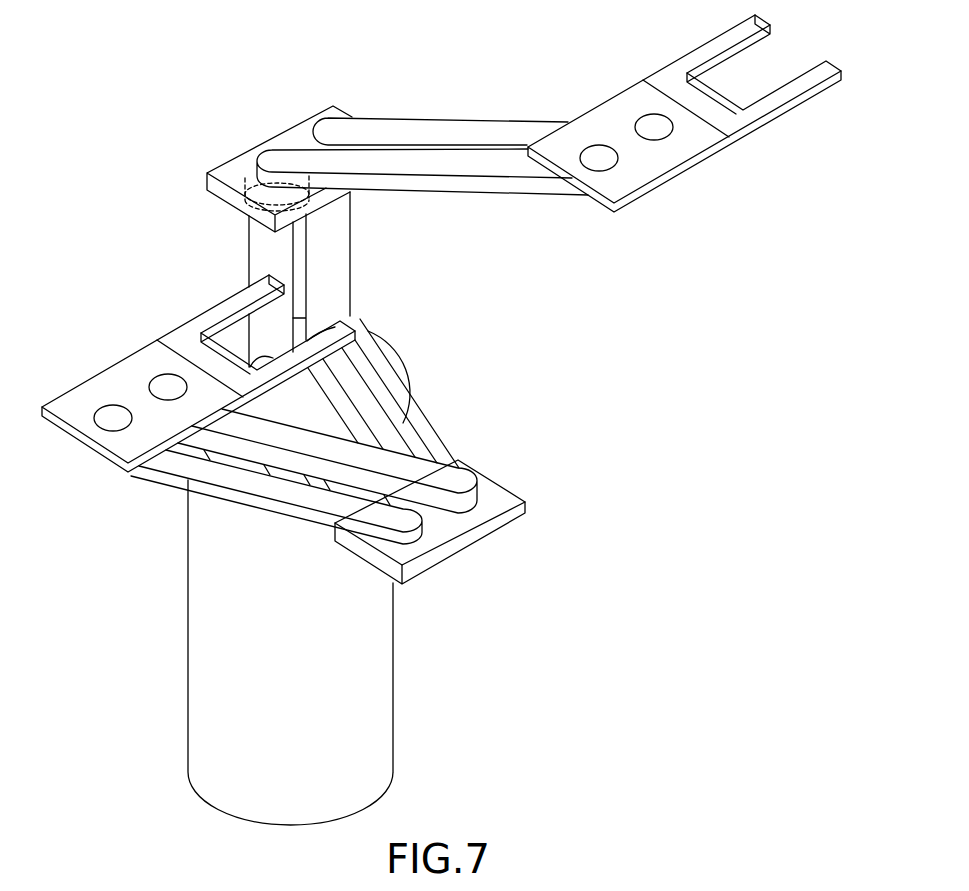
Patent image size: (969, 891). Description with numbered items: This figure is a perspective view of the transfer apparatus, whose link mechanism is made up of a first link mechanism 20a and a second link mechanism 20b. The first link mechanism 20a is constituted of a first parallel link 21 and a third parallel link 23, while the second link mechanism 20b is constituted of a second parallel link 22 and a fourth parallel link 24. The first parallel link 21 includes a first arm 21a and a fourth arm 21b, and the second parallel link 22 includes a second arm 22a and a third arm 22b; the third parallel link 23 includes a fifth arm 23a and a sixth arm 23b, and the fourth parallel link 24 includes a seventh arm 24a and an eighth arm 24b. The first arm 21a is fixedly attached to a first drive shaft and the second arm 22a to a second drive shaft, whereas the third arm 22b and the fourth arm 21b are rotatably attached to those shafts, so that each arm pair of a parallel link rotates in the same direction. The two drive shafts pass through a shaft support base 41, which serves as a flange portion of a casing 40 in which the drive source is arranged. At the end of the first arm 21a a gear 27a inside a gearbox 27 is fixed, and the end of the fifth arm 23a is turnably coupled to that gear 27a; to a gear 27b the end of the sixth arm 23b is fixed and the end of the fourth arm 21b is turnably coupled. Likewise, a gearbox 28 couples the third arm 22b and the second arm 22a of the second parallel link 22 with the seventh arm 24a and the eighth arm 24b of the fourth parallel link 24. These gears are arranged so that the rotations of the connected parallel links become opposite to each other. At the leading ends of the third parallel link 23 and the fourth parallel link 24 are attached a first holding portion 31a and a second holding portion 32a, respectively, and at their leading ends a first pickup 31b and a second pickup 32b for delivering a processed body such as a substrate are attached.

The first link mechanism 20a is at (357, 100).
The second link mechanism 20b is at (172, 486).
The first parallel link 21 is at (355, 259).
The first arm 21a is at (351, 220).
The fourth arm 21b is at (262, 247).
The second parallel link 22 is at (418, 418).
The second arm 22a is at (312, 398).
The third arm 22b is at (419, 447).
The third parallel link 23 is at (452, 115).
The fifth arm 23a is at (516, 121).
The sixth arm 23b is at (522, 189).
The fourth parallel link 24 is at (413, 550).
The seventh arm 24a is at (469, 481).
The eighth arm 24b is at (413, 523).
The gearbox 27 is at (280, 135).
The gear 27a is at (310, 127).
The gear 27b is at (246, 172).
The gearbox 28 is at (506, 525).
The first holding portion 31a is at (655, 170).
The first pickup 31b is at (777, 107).
The second holding portion 32a is at (108, 373).
The second pickup 32b is at (174, 332).
The casing 40 is at (384, 698).
The shaft support base 41 is at (384, 352).